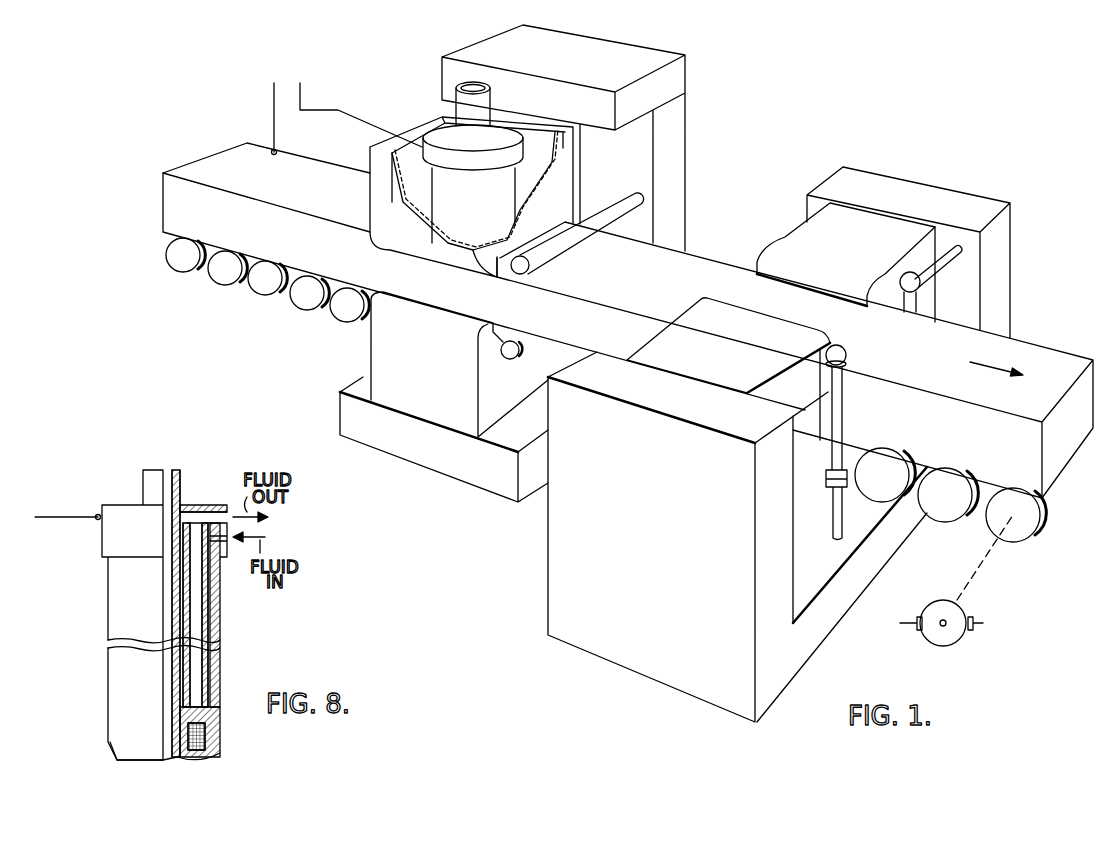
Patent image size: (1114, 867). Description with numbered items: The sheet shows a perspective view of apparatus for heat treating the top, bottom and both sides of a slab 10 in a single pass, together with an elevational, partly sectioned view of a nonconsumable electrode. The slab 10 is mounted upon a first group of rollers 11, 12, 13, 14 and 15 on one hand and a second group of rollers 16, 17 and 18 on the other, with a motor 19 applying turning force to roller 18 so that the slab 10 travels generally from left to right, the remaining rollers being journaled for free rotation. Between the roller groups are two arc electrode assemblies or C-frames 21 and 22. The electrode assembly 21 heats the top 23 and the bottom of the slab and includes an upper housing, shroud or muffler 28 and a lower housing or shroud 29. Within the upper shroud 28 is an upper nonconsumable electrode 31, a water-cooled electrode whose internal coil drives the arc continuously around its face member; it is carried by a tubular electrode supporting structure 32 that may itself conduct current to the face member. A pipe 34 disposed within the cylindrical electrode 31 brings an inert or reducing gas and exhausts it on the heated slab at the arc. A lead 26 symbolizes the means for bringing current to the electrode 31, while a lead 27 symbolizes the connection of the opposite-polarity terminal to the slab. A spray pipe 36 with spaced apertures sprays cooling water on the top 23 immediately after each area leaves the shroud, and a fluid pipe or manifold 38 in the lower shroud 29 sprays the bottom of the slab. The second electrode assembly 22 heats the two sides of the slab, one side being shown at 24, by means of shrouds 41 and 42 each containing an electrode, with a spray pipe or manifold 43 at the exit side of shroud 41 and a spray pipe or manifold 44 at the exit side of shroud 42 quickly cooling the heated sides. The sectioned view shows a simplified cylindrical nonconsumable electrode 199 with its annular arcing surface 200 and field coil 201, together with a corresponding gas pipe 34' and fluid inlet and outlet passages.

In FIG. 1, the slab 10 is at (464, 263).
In FIG. 1, the roller 11 is at (178, 259).
In FIG. 1, the roller 12 is at (225, 277).
In FIG. 1, the roller 13 is at (263, 284).
In FIG. 1, the roller 14 is at (305, 303).
In FIG. 1, the roller 15 is at (350, 318).
In FIG. 1, the roller 16 is at (880, 470).
In FIG. 1, the roller 17 is at (948, 508).
In FIG. 1, the roller 18 is at (1022, 534).
In FIG. 1, the motor 19 is at (937, 604).
In FIG. 1, the electrode assembly 21 is at (653, 49).
In FIG. 1, the electrode assembly 22 is at (952, 197).
In FIG. 1, the top of the slab 23 is at (200, 165).
In FIG. 1, the side of the slab 24 is at (175, 198).
In FIG. 1, the lead 26 is at (370, 126).
In FIG. 8, the lead 26 is at (66, 514).
In FIG. 1, the lead 27 is at (273, 100).
In FIG. 1, the upper housing, shroud or muffler 28 is at (370, 193).
In FIG. 1, the lower housing or shroud 29 is at (382, 360).
In FIG. 1, the upper nonconsumable electrode 31 is at (533, 143).
In FIG. 1, the tubular electrode supporting structure 32 is at (452, 218).
In FIG. 8, the tubular electrode supporting structure 32 is at (220, 637).
In FIG. 1, the pipe 34 is at (492, 100).
In FIG. 8, the tube 34' is at (195, 602).
In FIG. 1, the spray pipe 36 is at (617, 197).
In FIG. 1, the fluid pipe or manifold 38 is at (527, 345).
In FIG. 1, the shroud 41 is at (658, 337).
In FIG. 1, the shroud 42 is at (782, 244).
In FIG. 1, the spray pipe or manifold 43 is at (838, 408).
In FIG. 1, the spray pipe or manifold 44 is at (905, 312).
In FIG. 8, the cylindrical nonconsumable electrode 199 is at (108, 606).
In FIG. 8, the annular arcing surface 200 is at (152, 765).
In FIG. 8, the field coil 201 is at (207, 745).